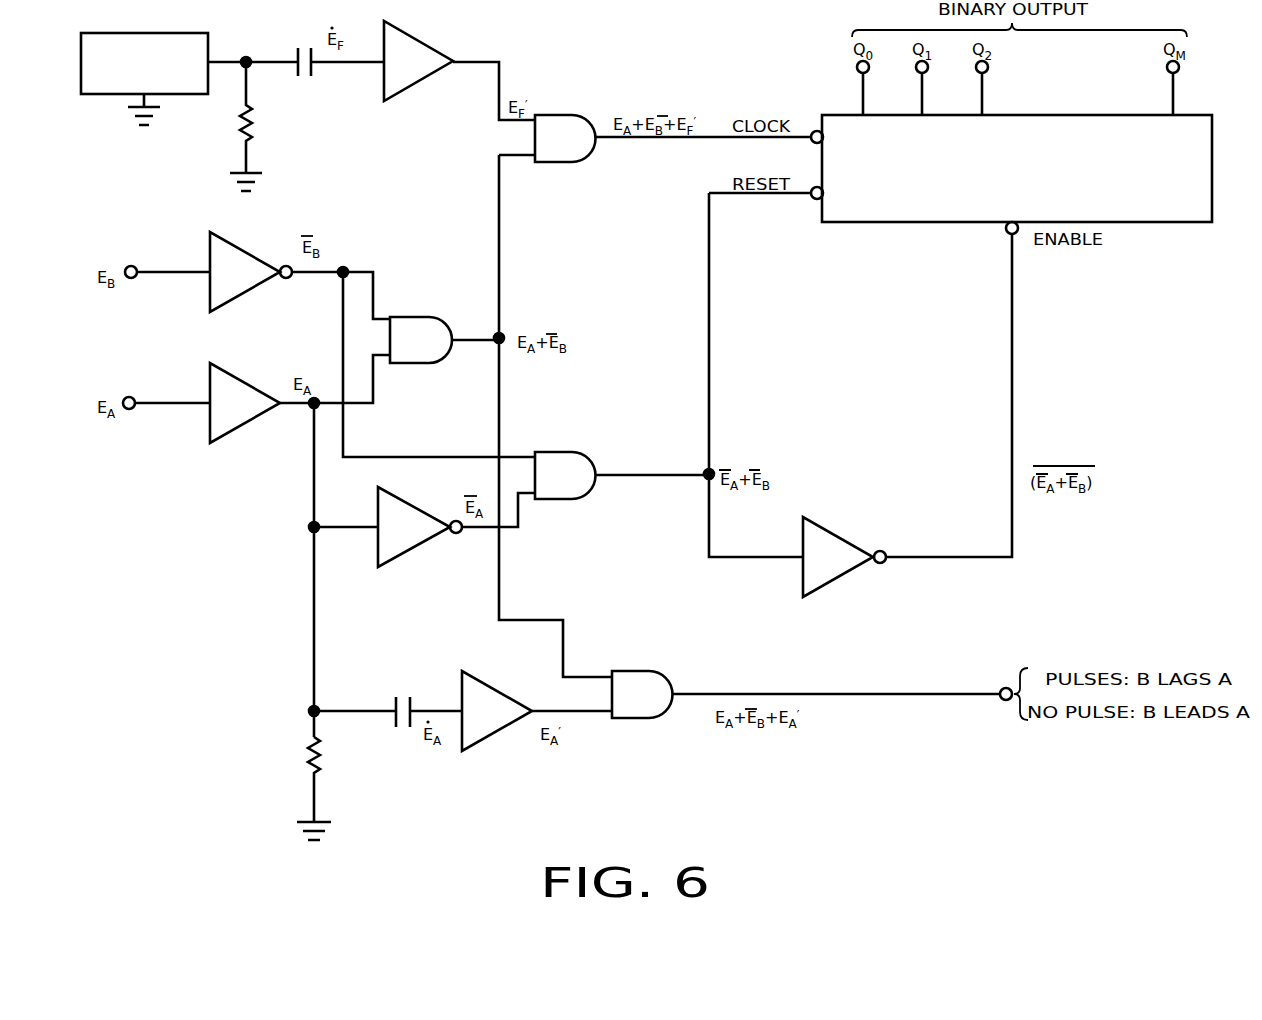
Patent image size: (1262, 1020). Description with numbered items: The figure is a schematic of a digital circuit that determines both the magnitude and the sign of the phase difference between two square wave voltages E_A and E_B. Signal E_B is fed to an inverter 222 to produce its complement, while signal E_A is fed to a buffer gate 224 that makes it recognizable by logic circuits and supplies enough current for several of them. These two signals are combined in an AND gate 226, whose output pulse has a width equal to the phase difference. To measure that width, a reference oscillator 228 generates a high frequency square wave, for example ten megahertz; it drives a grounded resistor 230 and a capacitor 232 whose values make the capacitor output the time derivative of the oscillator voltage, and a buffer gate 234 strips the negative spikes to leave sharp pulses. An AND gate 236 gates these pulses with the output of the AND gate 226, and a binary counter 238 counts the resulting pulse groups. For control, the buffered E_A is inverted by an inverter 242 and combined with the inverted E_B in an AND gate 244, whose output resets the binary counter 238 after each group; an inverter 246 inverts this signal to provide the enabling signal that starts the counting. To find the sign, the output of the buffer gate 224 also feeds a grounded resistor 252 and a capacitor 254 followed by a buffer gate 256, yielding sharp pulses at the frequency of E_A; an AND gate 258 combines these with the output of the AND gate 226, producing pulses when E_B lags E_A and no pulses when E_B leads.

The inverter 222 is at (251, 272).
The buffer gate 224 is at (245, 402).
The AND gate 226 is at (421, 329).
The reference oscillator 228 is at (144, 70).
The resistor 230 is at (231, 126).
The capacitor 232 is at (304, 39).
The buffer gate 234 is at (418, 59).
The AND gate 236 is at (565, 128).
The binary counter 238 is at (1017, 147).
The inverter 242 is at (420, 525).
The AND gate 244 is at (565, 467).
The inverter 246 is at (844, 554).
The resistor 252 is at (301, 788).
The capacitor 254 is at (402, 700).
The buffer gate 256 is at (497, 710).
The AND gate 258 is at (642, 685).